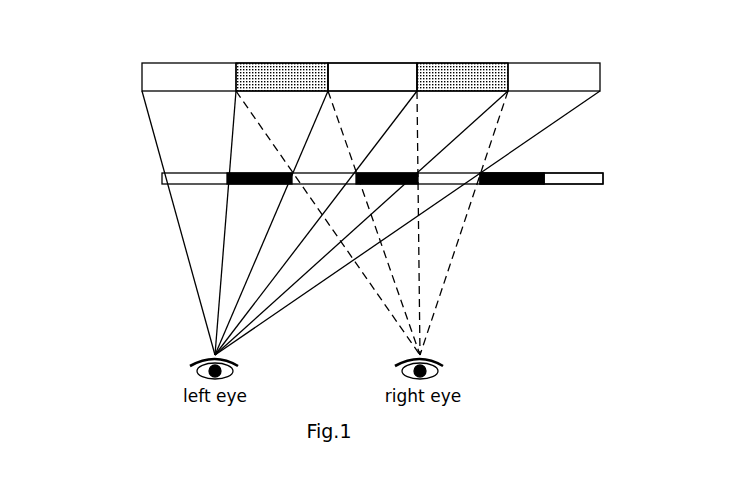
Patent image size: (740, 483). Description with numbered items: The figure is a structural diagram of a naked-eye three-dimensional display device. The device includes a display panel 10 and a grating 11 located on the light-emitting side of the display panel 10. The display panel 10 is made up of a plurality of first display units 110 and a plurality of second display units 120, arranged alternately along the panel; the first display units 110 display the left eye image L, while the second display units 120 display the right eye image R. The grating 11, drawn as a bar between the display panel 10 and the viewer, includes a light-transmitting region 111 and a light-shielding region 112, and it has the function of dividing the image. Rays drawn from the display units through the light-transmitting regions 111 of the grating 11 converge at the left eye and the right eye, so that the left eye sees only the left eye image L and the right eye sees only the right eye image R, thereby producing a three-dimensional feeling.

The display panel 10 is at (142, 78).
The grating 11 is at (162, 179).
The first display unit 110 is at (372, 63).
The second display unit 120 is at (285, 63).
The light-transmitting region 111 is at (569, 184).
The light-shielding region 112 is at (508, 184).